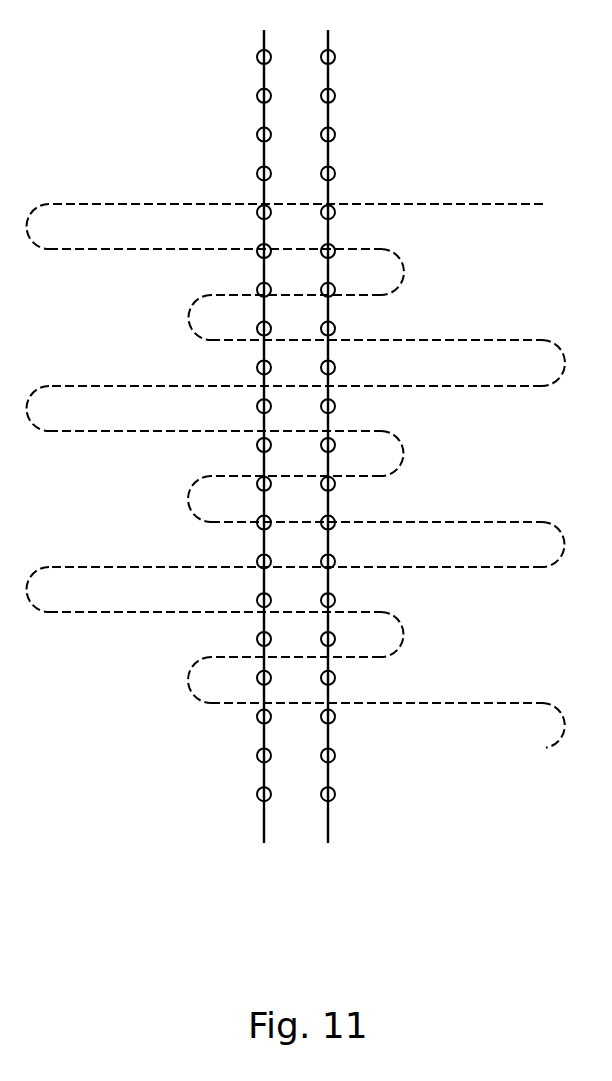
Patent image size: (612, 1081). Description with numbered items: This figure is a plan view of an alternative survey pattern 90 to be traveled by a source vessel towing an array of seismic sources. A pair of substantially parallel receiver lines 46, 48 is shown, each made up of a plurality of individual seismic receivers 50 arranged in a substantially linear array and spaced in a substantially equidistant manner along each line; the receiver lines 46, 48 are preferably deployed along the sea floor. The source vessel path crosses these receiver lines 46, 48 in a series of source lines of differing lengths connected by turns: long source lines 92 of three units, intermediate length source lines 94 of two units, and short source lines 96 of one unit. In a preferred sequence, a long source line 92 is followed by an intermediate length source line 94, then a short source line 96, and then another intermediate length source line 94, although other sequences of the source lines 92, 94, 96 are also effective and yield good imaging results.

The receiver line 46 is at (262, 79).
The receiver line 48 is at (330, 80).
The seismic receivers 50 is at (258, 133).
The survey pattern 90 is at (461, 175).
The long source line 92 is at (165, 203).
The intermediate length source line 94 is at (138, 251).
The short source line 96 is at (357, 297).